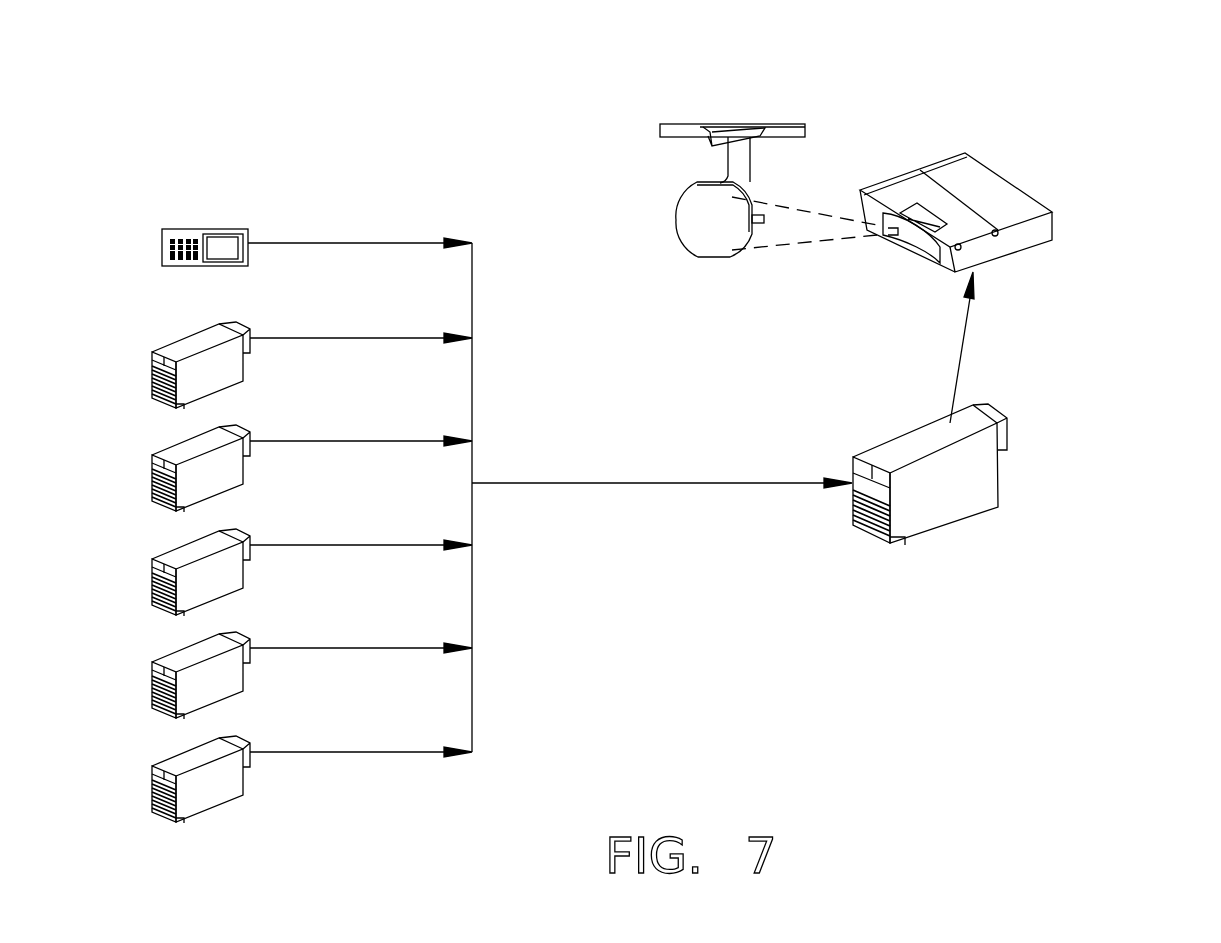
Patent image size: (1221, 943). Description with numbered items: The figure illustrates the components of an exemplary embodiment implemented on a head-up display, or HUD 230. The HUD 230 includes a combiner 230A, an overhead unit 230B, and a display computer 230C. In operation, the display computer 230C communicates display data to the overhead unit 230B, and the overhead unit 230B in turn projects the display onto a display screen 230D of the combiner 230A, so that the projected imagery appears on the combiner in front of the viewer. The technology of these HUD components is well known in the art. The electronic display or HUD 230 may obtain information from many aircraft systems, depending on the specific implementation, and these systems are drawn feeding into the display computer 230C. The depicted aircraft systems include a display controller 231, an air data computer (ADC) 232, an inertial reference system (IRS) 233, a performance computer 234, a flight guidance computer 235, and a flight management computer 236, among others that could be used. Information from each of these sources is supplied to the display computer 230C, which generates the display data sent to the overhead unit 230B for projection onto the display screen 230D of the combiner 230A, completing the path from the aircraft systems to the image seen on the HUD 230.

The head-up display (HUD) 230 is at (870, 100).
The combiner 230A is at (692, 123).
The overhead unit 230B is at (970, 187).
The display computer 230C is at (967, 422).
The display screen 230D is at (708, 238).
The display controller 231 is at (232, 230).
The air data computer (ADC) 232 is at (223, 330).
The inertial reference system (IRS) 233 is at (223, 433).
The performance computer 234 is at (223, 537).
The flight guidance computer 235 is at (223, 640).
The flight management computer 236 is at (223, 744).